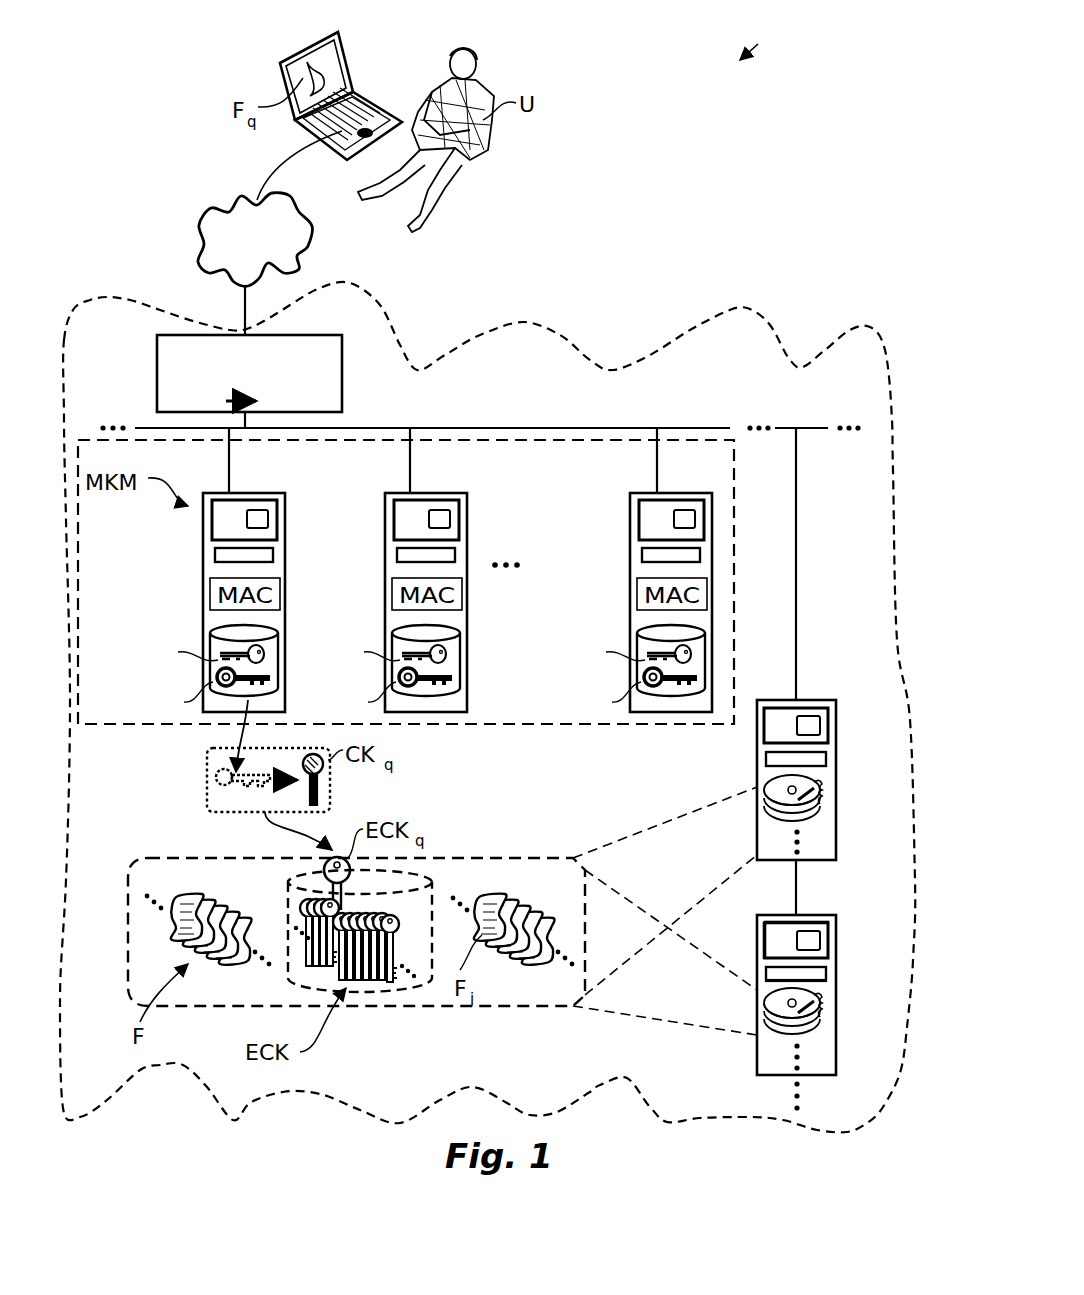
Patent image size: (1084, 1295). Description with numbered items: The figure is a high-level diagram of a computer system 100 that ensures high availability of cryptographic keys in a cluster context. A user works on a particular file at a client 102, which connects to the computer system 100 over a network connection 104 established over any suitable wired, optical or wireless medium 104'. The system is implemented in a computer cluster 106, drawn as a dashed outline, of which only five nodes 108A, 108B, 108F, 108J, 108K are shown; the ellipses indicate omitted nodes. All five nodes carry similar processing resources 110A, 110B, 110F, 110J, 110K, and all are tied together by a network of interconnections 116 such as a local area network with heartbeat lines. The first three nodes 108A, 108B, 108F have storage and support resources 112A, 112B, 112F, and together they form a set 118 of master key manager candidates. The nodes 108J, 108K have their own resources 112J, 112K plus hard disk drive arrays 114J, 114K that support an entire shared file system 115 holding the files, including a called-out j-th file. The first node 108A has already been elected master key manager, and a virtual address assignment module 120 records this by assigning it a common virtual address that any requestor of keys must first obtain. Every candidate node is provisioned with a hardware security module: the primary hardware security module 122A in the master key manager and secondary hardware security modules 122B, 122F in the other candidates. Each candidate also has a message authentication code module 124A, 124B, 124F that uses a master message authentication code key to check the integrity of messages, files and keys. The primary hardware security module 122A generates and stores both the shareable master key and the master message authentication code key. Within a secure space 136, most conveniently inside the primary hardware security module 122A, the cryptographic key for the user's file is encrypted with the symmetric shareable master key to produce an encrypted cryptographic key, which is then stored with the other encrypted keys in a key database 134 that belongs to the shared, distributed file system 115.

The computer system 100 is at (772, 36).
The client device 102 is at (380, 104).
The network connection 104 is at (255, 264).
The medium 104' is at (271, 165).
The computer cluster 106 is at (134, 281).
The first node 108A is at (211, 583).
The node 108B is at (397, 583).
The node 108F is at (638, 583).
The node 108J is at (789, 756).
The node 108K is at (802, 988).
The processing resources 110A is at (262, 500).
The processing resources 110B is at (448, 500).
The processing resources 110F is at (690, 500).
The processing resources 110J is at (818, 708).
The processing resources 110K is at (828, 940).
The storage resources 112A is at (214, 554).
The storage resources 112B is at (396, 554).
The storage resources 112F is at (641, 554).
The resources 112J is at (765, 758).
The resources 112K is at (828, 974).
The storage resources 114J is at (840, 788).
The storage resources 114K is at (774, 1042).
The shared file system 115 is at (537, 858).
The interconnections 116 is at (514, 428).
The set of master key manager candidates 118 is at (476, 725).
The virtual address assignment module 120 is at (157, 378).
The primary hardware security module 122A is at (211, 640).
The secondary hardware security module 122B is at (393, 640).
The secondary hardware security module 122F is at (638, 640).
The message authentication code module 124A is at (211, 592).
The message authentication code module 124B is at (393, 592).
The message authentication code module 124F is at (638, 592).
The key database 134 is at (400, 996).
The secure space 136 is at (210, 770).